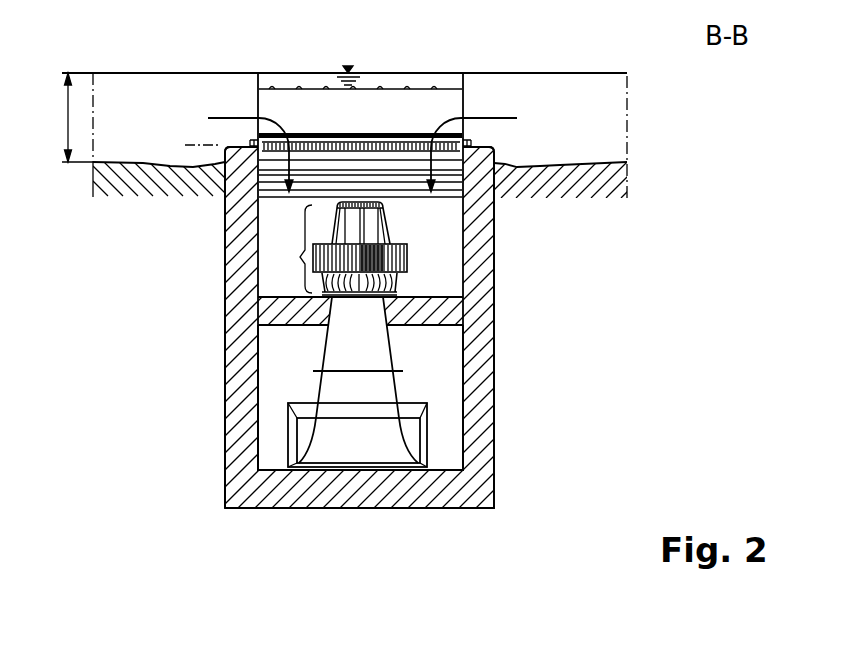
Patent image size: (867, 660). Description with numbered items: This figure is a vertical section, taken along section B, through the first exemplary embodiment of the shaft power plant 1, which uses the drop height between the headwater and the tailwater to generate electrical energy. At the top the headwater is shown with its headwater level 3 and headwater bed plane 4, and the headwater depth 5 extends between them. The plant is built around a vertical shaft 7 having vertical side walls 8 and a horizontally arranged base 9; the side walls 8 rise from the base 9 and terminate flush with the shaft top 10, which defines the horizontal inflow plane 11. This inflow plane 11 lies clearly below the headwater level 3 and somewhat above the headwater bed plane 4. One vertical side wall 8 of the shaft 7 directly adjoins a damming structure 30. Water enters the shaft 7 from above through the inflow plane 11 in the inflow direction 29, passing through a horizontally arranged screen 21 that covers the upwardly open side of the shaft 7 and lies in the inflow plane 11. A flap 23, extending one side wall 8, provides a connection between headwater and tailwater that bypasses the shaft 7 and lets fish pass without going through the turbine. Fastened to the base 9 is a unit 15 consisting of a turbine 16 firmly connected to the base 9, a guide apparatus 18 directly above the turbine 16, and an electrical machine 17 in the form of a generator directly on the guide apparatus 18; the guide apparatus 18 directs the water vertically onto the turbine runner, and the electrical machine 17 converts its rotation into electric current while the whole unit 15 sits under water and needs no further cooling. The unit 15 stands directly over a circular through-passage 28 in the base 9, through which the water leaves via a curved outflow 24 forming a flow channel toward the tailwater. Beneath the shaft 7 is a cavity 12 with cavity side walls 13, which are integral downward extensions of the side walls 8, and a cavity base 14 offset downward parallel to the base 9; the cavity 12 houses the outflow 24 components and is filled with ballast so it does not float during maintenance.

The shaft power plant 1 is at (672, 126).
The headwater level 3 is at (380, 73).
The headwater bed plane 4 is at (147, 162).
The headwater depth 5 is at (68, 118).
The vertical shaft 7 is at (520, 212).
The vertical side walls 8 is at (240, 245).
The base 9 is at (280, 314).
The shaft top 10 is at (212, 117).
The horizontal inflow plane 11 is at (198, 145).
The cavity 12 is at (272, 412).
The cavity side walls 13 is at (240, 445).
The cavity base 14 is at (352, 493).
The unit 15 is at (400, 248).
The turbine 16 is at (400, 288).
The electrical machine 17 is at (390, 230).
The guide apparatus 18 is at (407, 263).
The screen 21 is at (332, 143).
The flap 23 is at (360, 105).
The outflow 24 is at (408, 352).
The through-passage 28 is at (335, 312).
The inflow direction 29 is at (245, 140).
The damming structure 30 is at (116, 85).